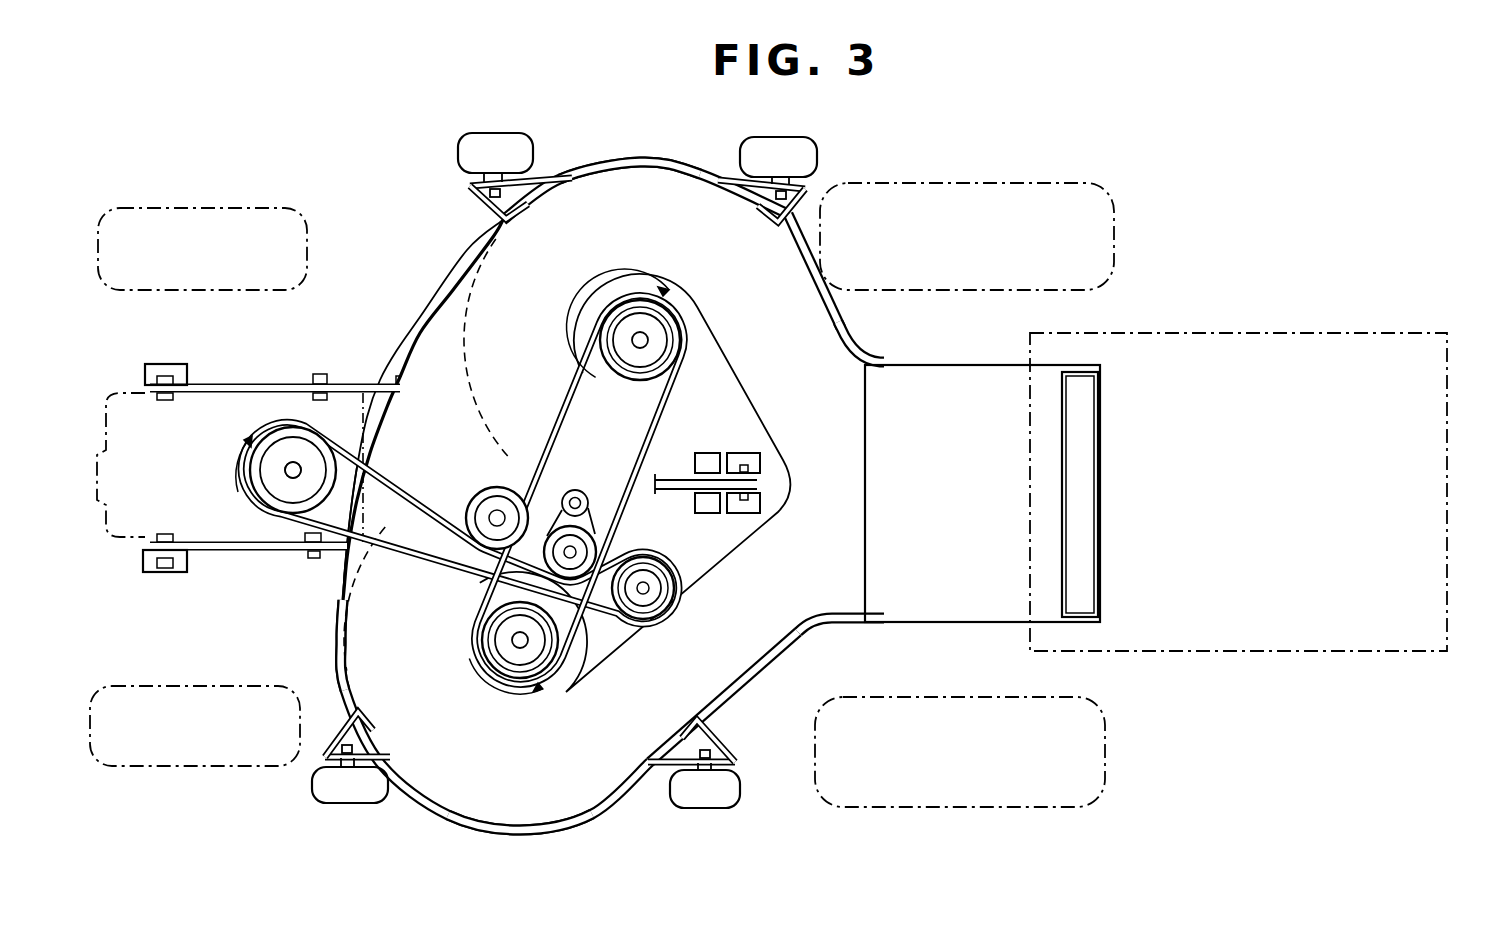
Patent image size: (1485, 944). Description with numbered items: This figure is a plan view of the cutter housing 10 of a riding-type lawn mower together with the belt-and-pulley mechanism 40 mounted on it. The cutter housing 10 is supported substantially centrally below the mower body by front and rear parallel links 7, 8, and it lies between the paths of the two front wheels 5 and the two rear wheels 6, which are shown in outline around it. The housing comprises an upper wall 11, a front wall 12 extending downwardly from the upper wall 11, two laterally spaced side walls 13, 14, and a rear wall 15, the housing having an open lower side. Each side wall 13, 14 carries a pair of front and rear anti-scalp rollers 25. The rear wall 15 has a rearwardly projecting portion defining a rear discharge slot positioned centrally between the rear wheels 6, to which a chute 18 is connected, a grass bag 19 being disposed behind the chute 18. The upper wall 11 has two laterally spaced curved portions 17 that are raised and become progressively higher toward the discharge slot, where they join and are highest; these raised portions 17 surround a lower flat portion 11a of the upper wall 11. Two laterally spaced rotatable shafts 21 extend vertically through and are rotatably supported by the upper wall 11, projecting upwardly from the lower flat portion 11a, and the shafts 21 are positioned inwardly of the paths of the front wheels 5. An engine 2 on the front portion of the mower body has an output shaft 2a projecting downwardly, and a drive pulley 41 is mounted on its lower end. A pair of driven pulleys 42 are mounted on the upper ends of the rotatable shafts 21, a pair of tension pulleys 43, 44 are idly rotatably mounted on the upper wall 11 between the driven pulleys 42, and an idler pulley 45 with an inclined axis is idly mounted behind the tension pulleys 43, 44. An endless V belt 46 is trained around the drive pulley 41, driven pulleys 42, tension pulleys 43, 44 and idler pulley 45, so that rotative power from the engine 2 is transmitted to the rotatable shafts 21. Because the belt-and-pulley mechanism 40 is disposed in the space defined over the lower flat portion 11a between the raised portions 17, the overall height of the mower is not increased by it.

The engine 2 is at (110, 405).
The output shaft 2a is at (290, 466).
The front wheels 5 is at (212, 208).
The rear wheels 6 is at (996, 183).
The front parallel link 7 is at (249, 384).
The rear parallel link 8 is at (668, 478).
The cutter housing 10 is at (592, 478).
The upper wall 11 is at (433, 328).
The lower flat portion 11a is at (740, 430).
The front wall 12 is at (338, 588).
The side wall 13 is at (531, 830).
The side wall 14 is at (613, 160).
The rear wall 15 is at (845, 333).
The curved portions 17 is at (800, 287).
The chute 18 is at (1100, 496).
The grass bag 19 is at (1445, 520).
The rotatable shafts 21 is at (646, 343).
The anti-scalp rollers 25 is at (512, 148).
The belt-and-pulley mechanism 40 is at (612, 636).
The drive pulley 41 is at (275, 494).
The driven pulleys 42 is at (640, 322).
The tension pulley 43 is at (493, 515).
The tension pulley 44 is at (590, 555).
The idler pulley 45 is at (666, 574).
The endless V belt 46 is at (415, 556).